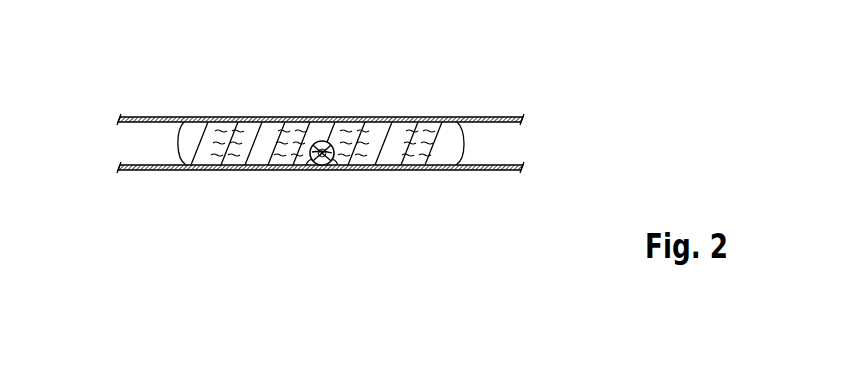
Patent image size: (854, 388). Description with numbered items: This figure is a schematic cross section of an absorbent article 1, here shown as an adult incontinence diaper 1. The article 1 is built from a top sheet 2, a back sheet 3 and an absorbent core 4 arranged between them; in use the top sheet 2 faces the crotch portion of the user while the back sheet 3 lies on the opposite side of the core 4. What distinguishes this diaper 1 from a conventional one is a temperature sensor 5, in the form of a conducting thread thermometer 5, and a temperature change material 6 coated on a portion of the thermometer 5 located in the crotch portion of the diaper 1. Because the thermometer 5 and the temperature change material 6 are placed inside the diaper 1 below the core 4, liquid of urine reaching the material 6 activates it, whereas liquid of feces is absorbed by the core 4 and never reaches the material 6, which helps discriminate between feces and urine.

The absorbent article 1 is at (143, 108).
The top sheet 2 is at (499, 116).
The back sheet 3 is at (499, 172).
The absorbent core 4 is at (452, 144).
The temperature sensor 5 is at (328, 165).
The temperature change material 6 is at (306, 165).